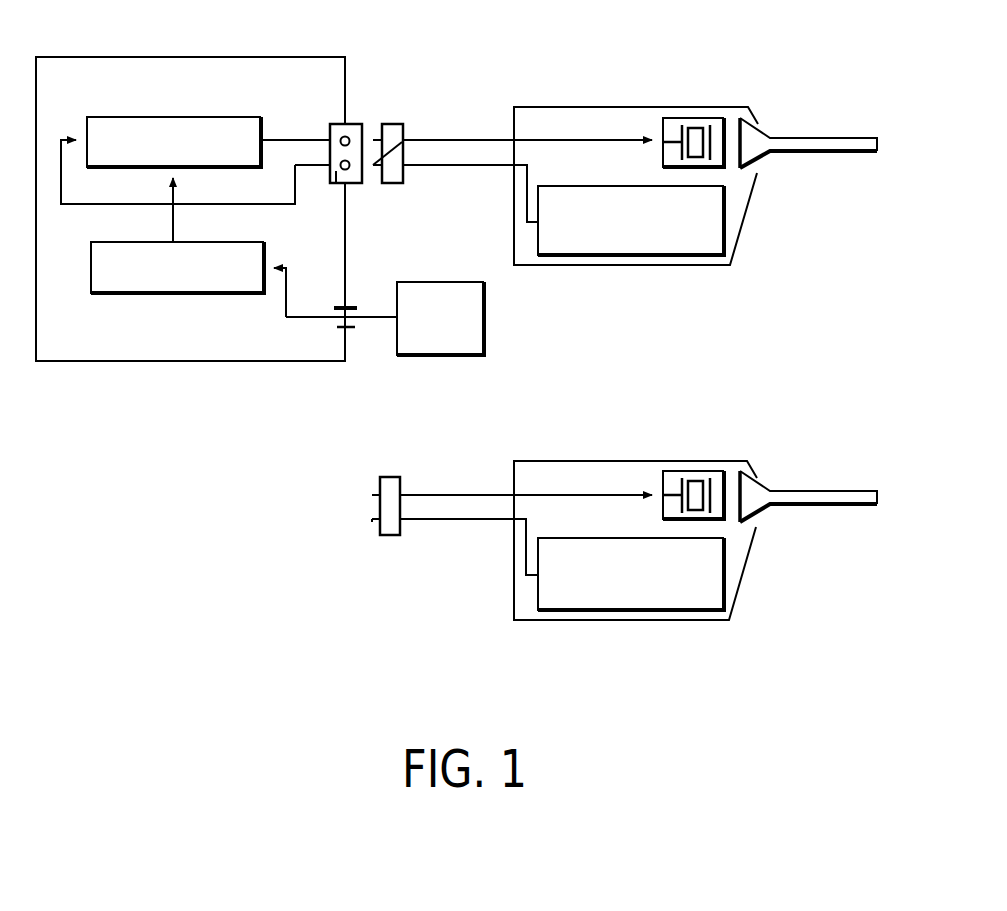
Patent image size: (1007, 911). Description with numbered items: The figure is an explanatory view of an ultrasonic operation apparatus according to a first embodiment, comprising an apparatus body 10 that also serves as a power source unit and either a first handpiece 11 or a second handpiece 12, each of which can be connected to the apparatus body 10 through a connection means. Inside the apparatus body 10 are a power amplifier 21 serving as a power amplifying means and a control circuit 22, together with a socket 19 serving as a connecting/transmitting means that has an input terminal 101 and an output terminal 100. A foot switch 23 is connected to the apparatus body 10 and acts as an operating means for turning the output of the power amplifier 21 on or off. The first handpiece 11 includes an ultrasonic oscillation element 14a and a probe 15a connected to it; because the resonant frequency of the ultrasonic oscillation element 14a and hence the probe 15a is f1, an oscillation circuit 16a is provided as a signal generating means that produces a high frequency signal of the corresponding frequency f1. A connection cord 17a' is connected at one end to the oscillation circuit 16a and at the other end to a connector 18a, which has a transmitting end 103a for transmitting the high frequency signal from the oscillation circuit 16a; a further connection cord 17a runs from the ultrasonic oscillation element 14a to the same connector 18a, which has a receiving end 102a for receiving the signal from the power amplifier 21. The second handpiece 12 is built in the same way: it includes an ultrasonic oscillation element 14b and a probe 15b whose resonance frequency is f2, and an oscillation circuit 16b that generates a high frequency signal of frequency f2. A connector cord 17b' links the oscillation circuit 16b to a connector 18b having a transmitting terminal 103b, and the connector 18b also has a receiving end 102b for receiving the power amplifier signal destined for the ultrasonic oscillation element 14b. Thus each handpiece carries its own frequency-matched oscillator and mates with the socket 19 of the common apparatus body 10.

The apparatus body 10 is at (267, 57).
The power amplifier 21 is at (247, 117).
The control circuit 22 is at (113, 294).
The foot switch 23 is at (445, 282).
The socket 19 is at (351, 185).
The output terminal 100 is at (350, 131).
The input terminal 101 is at (335, 185).
The receiving end 102a is at (392, 124).
The transmitting end 103a is at (390, 128).
The connector 18a is at (400, 184).
The connection cord 17a is at (526, 294).
The connection cord 17a' is at (470, 196).
The first handpiece 11 is at (600, 107).
The ultrasonic oscillation element 14a is at (688, 118).
The probe 15a is at (862, 138).
The oscillation circuit 16a is at (615, 257).
The receiving end 102b is at (380, 493).
The transmitting terminal 103b is at (372, 522).
The connector 18b is at (394, 478).
The connector cord 17b' is at (469, 550).
The second handpiece 12 is at (600, 461).
The ultrasonic oscillation element 14b is at (688, 471).
The probe 15b is at (862, 491).
The oscillation circuit 16b is at (615, 620).